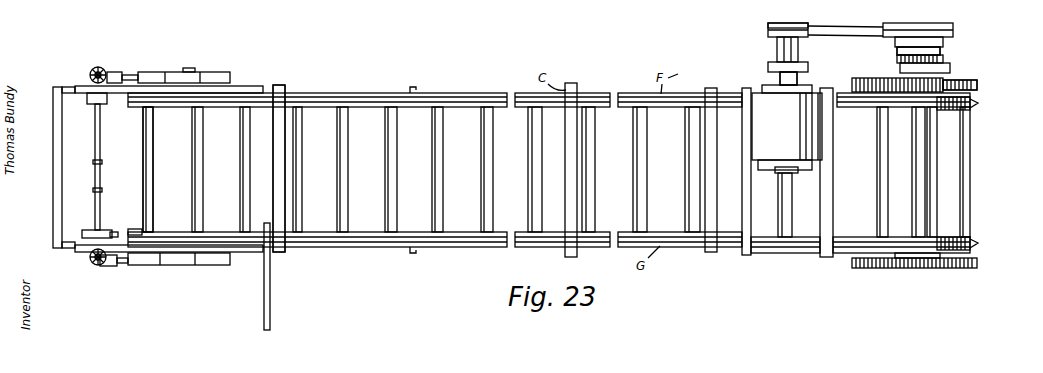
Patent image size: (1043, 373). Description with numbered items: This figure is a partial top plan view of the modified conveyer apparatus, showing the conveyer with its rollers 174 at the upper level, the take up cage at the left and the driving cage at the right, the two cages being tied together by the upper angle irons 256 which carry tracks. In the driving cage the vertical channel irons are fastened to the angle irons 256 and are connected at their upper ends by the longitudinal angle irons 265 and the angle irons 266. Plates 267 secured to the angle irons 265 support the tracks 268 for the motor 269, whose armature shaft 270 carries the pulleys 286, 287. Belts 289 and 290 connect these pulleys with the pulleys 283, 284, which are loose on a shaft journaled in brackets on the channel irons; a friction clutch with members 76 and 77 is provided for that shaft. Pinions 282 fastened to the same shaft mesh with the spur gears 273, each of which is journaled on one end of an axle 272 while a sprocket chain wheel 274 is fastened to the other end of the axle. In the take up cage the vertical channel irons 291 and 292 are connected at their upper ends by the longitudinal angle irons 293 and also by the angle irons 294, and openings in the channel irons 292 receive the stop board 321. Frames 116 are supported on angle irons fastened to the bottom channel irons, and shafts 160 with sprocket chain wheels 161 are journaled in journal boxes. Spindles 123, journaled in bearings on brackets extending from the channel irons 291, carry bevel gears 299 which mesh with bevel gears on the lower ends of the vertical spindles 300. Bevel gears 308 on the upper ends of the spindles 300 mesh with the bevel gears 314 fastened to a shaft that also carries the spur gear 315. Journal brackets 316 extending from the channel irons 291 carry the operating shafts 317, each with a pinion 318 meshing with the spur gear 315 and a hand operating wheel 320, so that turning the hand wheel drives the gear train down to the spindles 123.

The friction clutch member 76 is at (897, 58).
The friction clutch member 77 is at (943, 58).
The frame 116 is at (215, 72).
The spindle 123 is at (118, 72).
The shaft 160 is at (189, 68).
The sprocket chain wheel 161 is at (130, 230).
The roller 174 is at (385, 167).
The upper angle iron 256 is at (468, 93).
The longitudinal angle iron 265 is at (850, 88).
The angle iron 266 is at (935, 137).
The plate 267 is at (748, 204).
The track 268 is at (826, 122).
The motor 269 is at (787, 129).
The armature shaft 270 is at (795, 23).
The axle 272 is at (916, 186).
The spur gear 273 is at (978, 85).
The sprocket chain wheel 274 is at (979, 104).
The pinion 282 is at (962, 80).
The pulley 283 is at (950, 68).
The pulley 284 is at (953, 28).
The pulley 286 is at (768, 68).
The pulley 287 is at (770, 26).
The belt 289 is at (842, 70).
The belt 290 is at (840, 29).
The vertical channel iron 291 is at (68, 87).
The vertical channel iron 292 is at (276, 85).
The longitudinal angle iron 293 is at (238, 86).
The angle iron 294 is at (55, 87).
The bevel gear 299 is at (122, 264).
The vertical spindle 300 is at (100, 67).
The bevel gear 308 is at (104, 70).
The bevel gear 314 is at (99, 106).
The spur gear 315 is at (150, 232).
The journal bracket 316 is at (87, 98).
The operating shaft 317 is at (93, 163).
The pinion 318 is at (112, 232).
The hand operating wheel 320 is at (90, 229).
The stop board 321 is at (271, 273).